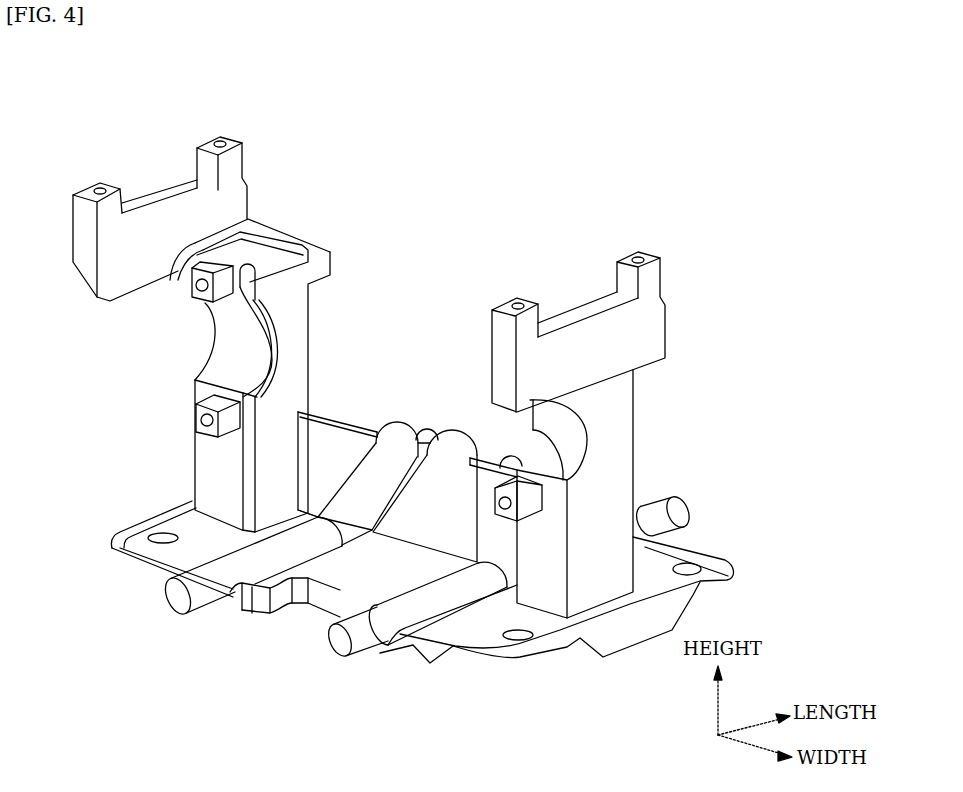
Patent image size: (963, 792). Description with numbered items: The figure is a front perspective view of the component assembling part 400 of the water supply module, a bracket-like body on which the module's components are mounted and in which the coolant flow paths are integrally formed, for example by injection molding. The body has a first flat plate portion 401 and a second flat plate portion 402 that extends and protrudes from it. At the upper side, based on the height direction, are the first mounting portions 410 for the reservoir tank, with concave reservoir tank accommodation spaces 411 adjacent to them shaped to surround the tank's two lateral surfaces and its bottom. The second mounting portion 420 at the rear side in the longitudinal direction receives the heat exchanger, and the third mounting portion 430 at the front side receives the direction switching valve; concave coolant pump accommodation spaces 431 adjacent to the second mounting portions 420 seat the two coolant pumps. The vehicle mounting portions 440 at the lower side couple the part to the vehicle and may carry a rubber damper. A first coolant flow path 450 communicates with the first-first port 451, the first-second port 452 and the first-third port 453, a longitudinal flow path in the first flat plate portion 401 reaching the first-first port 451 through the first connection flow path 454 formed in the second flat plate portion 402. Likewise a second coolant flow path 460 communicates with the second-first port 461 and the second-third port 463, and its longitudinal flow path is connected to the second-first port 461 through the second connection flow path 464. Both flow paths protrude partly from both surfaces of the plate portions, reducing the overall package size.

The component assembling part 400 is at (123, 553).
The first flat plate portion 401 is at (486, 600).
The second flat plate portion 402 is at (338, 430).
The first mounting portion 410 is at (213, 142).
The reservoir tank accommodation space 411 is at (257, 247).
The second mounting portion 420 is at (333, 265).
The third mounting portion 430 is at (192, 292).
The coolant pump accommodation space 431 is at (223, 347).
The vehicle mounting portion 440 is at (623, 623).
The first coolant flow path 450 is at (420, 607).
The first-first port 451 is at (517, 442).
The first-second port 452 is at (688, 505).
The first-third port 453 is at (330, 653).
The first connection flow path 454 is at (517, 468).
The second coolant flow path 460 is at (257, 610).
The second-first port 461 is at (420, 425).
The second-third port 463 is at (170, 612).
The second connection flow path 464 is at (370, 478).